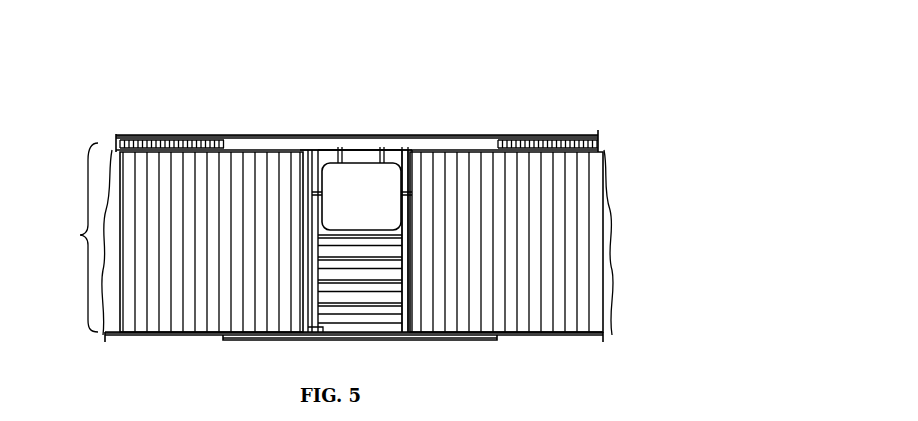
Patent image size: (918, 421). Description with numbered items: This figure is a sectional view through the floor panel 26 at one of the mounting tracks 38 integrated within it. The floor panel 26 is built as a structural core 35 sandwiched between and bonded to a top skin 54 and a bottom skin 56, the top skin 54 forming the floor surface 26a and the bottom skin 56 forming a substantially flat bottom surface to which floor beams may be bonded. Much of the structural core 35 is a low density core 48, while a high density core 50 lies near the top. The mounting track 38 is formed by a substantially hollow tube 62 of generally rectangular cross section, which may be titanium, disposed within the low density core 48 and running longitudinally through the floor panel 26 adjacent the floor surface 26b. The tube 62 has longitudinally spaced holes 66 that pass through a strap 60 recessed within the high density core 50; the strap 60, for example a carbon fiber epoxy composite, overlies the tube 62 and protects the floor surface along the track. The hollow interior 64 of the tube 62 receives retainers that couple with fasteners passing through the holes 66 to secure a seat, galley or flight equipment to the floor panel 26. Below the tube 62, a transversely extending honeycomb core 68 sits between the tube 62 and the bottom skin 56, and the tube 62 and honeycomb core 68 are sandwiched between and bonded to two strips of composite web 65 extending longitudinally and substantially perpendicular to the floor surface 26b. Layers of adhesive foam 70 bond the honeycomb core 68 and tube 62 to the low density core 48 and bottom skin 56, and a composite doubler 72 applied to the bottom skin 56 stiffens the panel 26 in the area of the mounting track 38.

The floor panel 26 is at (543, 88).
The floor surface 26a is at (574, 337).
The floor surface 26b is at (480, 133).
The structural core 35 is at (74, 237).
The mounting track 38 is at (420, 118).
The low density core 48 is at (187, 288).
The high density core 50 is at (191, 140).
The top skin 54 is at (548, 140).
The bottom skin 56 is at (203, 333).
The strap 60 is at (263, 146).
The hollow tube 62 is at (395, 152).
The hollow interior 64 is at (337, 177).
The composite web 65 is at (314, 183).
The holes 66 is at (354, 149).
The honeycomb core 68 is at (383, 310).
The adhesive foam 70 is at (306, 280).
The composite doubler 72 is at (489, 338).